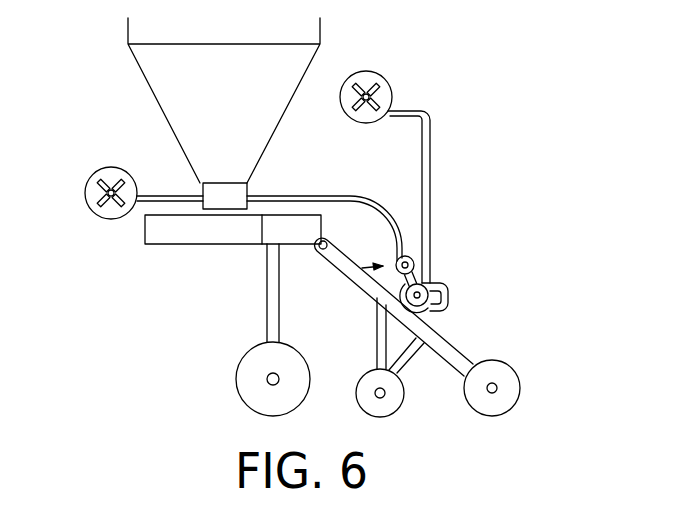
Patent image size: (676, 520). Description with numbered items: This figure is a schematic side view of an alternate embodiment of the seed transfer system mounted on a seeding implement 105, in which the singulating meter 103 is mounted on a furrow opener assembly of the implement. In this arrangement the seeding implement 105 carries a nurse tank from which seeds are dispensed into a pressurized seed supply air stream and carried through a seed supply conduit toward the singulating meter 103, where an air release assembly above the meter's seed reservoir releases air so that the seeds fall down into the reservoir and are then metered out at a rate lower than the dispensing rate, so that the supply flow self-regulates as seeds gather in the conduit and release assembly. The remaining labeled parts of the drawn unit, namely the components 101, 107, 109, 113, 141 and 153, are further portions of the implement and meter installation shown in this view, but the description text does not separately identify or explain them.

The seeding implement 105 is at (120, 265).
The housing 109 is at (232, 245).
The arm 101 is at (352, 278).
The press wheel 107 is at (467, 356).
The feed tube 113 is at (432, 172).
The nozzle 141 is at (430, 227).
The pivot 153 is at (428, 285).
The singulating meter 103 is at (440, 318).